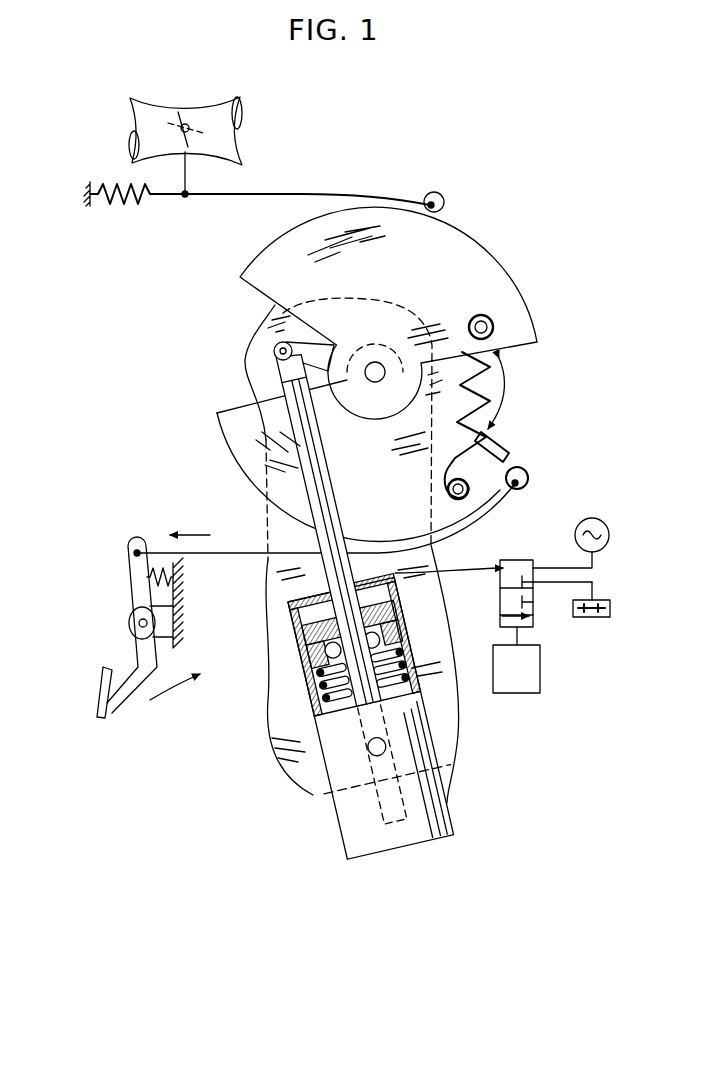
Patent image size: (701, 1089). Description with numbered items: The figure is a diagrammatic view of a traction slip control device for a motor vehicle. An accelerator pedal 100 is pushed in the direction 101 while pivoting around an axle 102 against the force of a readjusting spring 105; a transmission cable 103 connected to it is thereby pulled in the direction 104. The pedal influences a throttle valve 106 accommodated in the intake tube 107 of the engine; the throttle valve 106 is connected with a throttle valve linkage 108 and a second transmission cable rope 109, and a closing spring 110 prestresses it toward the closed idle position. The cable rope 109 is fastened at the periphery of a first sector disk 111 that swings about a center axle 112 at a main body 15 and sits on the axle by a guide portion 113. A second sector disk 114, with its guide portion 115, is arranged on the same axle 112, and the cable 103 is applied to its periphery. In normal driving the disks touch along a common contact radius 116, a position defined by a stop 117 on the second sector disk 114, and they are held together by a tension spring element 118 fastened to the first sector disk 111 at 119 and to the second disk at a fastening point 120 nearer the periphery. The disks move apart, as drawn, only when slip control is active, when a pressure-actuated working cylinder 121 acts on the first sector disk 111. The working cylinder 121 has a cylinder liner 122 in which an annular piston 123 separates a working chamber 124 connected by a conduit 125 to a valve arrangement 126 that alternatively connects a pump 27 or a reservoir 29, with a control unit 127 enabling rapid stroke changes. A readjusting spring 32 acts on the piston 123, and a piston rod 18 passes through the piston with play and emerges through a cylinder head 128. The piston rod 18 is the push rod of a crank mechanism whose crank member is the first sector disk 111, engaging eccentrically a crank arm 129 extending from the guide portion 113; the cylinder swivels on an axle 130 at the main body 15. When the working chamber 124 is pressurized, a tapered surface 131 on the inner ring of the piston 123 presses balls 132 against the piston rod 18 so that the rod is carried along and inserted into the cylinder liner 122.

The main body 15 is at (313, 775).
The piston rod 18 is at (302, 452).
The pump 27 is at (608, 542).
The reservoir 29 is at (610, 608).
The readjusting spring 32 is at (420, 690).
The accelerator pedal 100 is at (100, 683).
The direction of pedal actuation 101 is at (150, 702).
The axle 102 is at (127, 625).
The transmission cable 103 is at (228, 552).
The direction of cable pull 104 is at (205, 535).
The readjusting spring 105 is at (131, 585).
The throttle valve 106 is at (190, 117).
The intake tube 107 is at (152, 107).
The throttle valve linkage 108 is at (186, 175).
The second transmission cable rope 109 is at (302, 193).
The closing spring 110 is at (119, 205).
The first sector disk 111 is at (470, 250).
The center axle 112 is at (372, 385).
The guide portion 113 is at (385, 412).
The second sector disk 114 is at (225, 432).
The guide portion 115 is at (376, 302).
The contact radius 116 is at (500, 380).
The stop 117 is at (503, 448).
The spring element 118 is at (497, 402).
The fastening point 119 is at (490, 322).
The fastening point 120 is at (480, 500).
The working cylinder 121 is at (462, 815).
The cylinder liner 122 is at (310, 689).
The piston 123 is at (296, 602).
The working chamber 124 is at (362, 580).
The conduit 125 is at (455, 570).
The valve arrangement 126 is at (534, 625).
The control unit 127 is at (540, 670).
The cylinder head 128 is at (394, 580).
The crank arm 129 is at (309, 352).
The axle 130 is at (386, 747).
The tapered surface 131 is at (303, 647).
The balls 132 is at (410, 640).